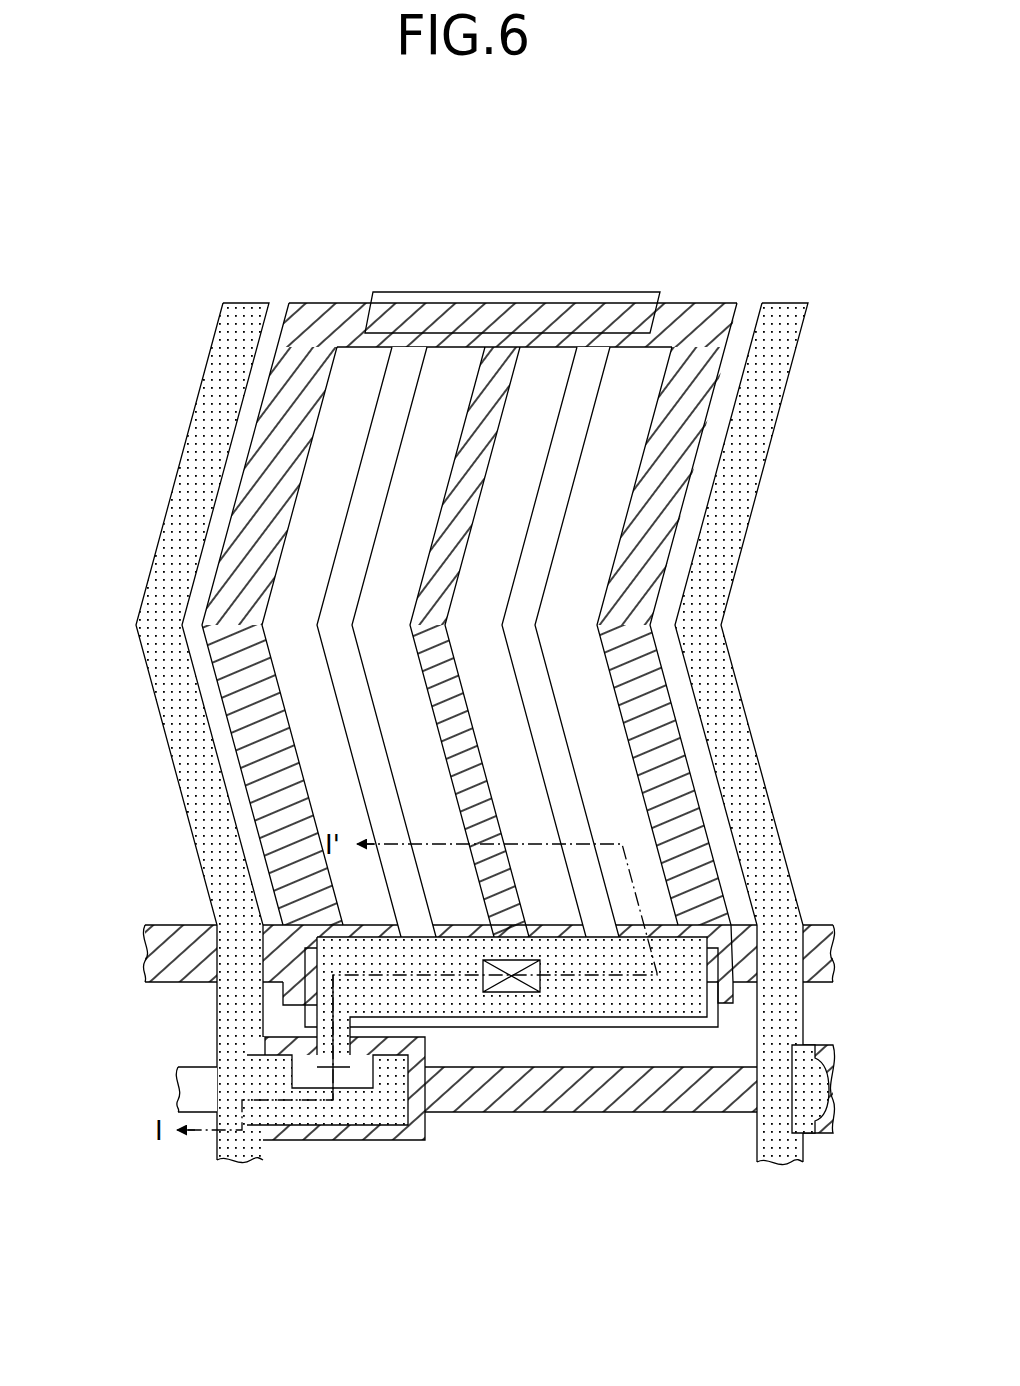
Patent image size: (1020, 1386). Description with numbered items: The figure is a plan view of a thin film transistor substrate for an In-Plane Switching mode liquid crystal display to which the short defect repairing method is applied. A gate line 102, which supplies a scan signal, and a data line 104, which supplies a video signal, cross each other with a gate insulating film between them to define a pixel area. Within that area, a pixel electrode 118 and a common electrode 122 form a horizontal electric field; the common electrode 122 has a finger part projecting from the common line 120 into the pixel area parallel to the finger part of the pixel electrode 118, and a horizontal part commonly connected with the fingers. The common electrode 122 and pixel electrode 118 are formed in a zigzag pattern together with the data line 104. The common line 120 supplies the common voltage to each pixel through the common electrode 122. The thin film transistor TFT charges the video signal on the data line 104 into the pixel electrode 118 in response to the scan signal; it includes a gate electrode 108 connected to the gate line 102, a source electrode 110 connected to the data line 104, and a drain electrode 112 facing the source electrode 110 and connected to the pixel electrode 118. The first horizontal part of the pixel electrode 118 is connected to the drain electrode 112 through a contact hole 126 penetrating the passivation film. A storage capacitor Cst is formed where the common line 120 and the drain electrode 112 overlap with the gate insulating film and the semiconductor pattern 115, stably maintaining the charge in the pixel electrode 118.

The gate line 102 is at (725, 1092).
The data line 104 is at (165, 718).
The gate electrode 108 is at (377, 1140).
The source electrode 110 is at (328, 1112).
The drain electrode 112 is at (667, 992).
The semiconductor pattern 115 is at (358, 1071).
The pixel electrode 118 is at (385, 418).
The common line 120 is at (158, 948).
The common electrode 122 is at (440, 522).
The contact hole 126 is at (513, 985).
The storage capacitor Cst is at (621, 318).
The thin film transistor TFT is at (294, 1148).